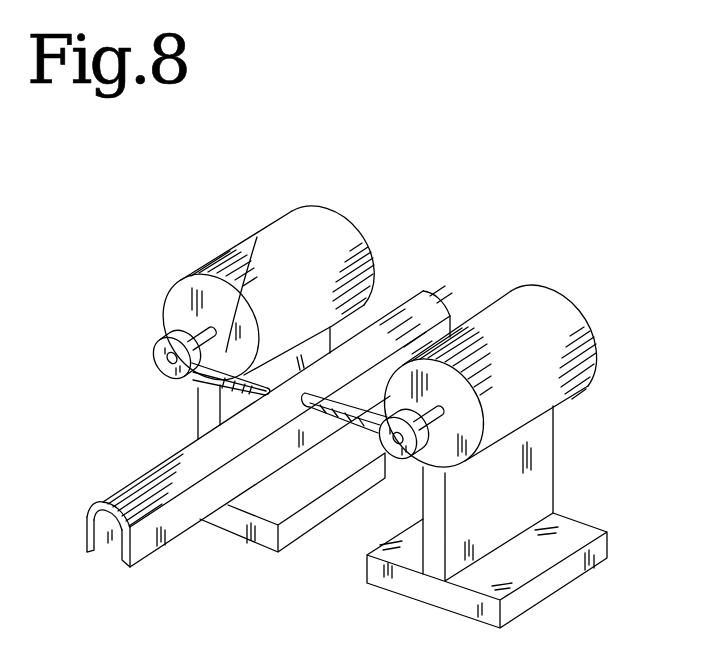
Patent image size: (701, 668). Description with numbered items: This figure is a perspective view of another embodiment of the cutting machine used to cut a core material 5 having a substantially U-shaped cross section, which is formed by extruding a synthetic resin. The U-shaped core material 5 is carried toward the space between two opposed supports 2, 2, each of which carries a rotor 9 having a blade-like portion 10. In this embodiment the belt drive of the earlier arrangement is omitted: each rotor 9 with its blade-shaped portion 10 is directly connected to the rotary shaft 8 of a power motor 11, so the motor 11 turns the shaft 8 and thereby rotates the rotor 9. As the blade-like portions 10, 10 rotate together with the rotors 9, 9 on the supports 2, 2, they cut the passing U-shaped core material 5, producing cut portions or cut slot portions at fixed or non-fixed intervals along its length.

The support 2 is at (188, 410).
The core material 5 is at (130, 483).
The rotary shaft 8 is at (462, 317).
The rotor 9 is at (158, 343).
The blade-like portion 10 is at (257, 237).
The power motor 11 is at (343, 258).